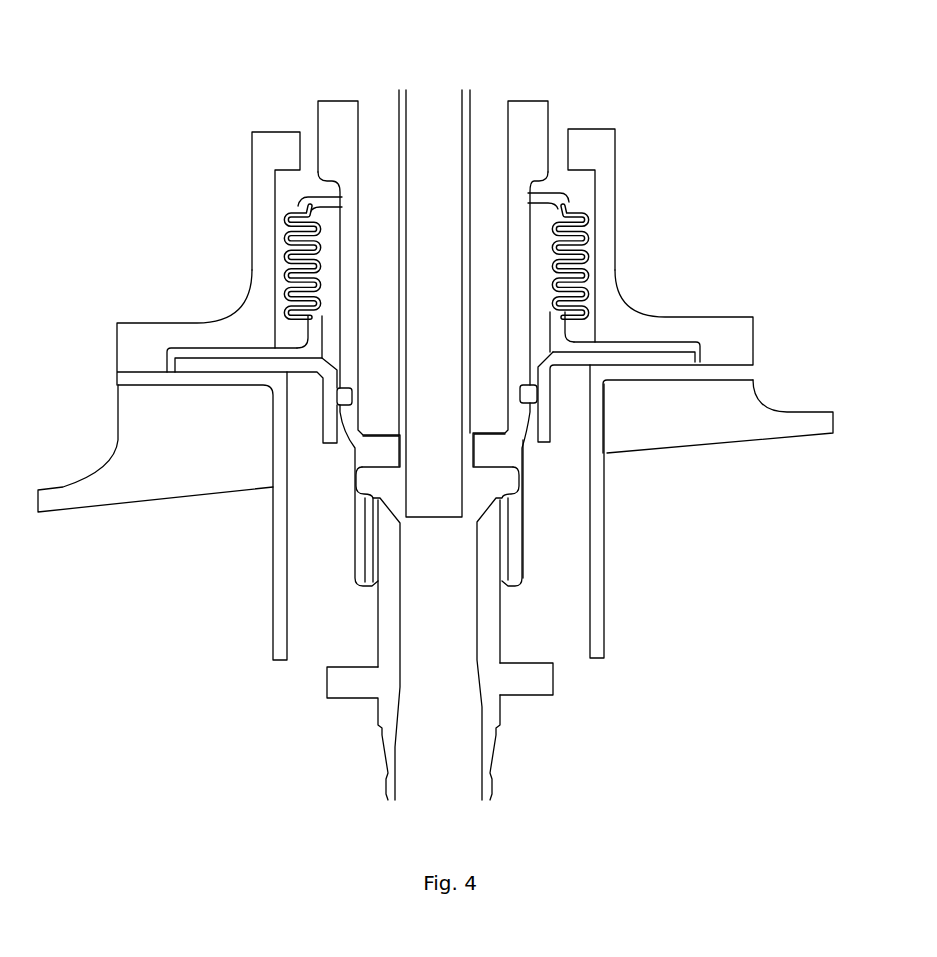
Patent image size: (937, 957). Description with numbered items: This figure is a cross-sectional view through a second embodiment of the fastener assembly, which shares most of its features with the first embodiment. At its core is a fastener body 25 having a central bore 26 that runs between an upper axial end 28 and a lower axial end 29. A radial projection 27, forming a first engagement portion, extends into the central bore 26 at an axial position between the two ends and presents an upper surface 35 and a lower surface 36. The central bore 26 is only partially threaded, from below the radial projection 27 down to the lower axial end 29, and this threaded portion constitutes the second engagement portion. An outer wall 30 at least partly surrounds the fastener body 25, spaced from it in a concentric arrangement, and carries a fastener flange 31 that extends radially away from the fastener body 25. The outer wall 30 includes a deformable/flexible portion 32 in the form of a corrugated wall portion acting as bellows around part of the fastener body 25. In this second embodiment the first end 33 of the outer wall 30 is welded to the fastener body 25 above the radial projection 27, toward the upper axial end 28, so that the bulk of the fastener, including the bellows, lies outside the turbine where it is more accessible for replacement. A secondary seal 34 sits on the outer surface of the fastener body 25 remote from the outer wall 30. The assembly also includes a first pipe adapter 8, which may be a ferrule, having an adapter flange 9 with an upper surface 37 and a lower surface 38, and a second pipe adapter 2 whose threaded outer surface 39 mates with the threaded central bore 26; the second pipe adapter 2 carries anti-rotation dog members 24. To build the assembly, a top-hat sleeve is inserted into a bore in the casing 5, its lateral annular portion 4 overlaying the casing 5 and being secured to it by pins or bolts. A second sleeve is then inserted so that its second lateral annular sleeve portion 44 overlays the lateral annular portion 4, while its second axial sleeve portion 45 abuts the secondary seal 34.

The second pipe adapter 2 is at (385, 632).
The lateral annular portion 4 is at (157, 377).
The casing 5 is at (682, 428).
The first pipe adapter 8 is at (395, 143).
The adapter flange 9 is at (377, 498).
The anti-rotation dog members 24 is at (535, 680).
The fastener body 25 is at (528, 128).
The central bore 26 is at (488, 179).
The radial projection 27 is at (492, 452).
The upper axial end 28 is at (338, 100).
The lower axial end 29 is at (515, 587).
The outer wall 30 is at (560, 335).
The fastener flange 31 is at (667, 342).
The deformable/flexible portion 32 is at (585, 233).
The first end 33 is at (312, 200).
The secondary seal 34 is at (340, 395).
The upper surface 35 is at (372, 433).
The lower surface 36 is at (286, 633).
The upper surface 37 is at (368, 478).
The lower surface 38 is at (487, 508).
The threaded outer surface 39 is at (375, 542).
The second lateral annular sleeve portion 44 is at (682, 358).
The second axial sleeve portion 45 is at (540, 413).